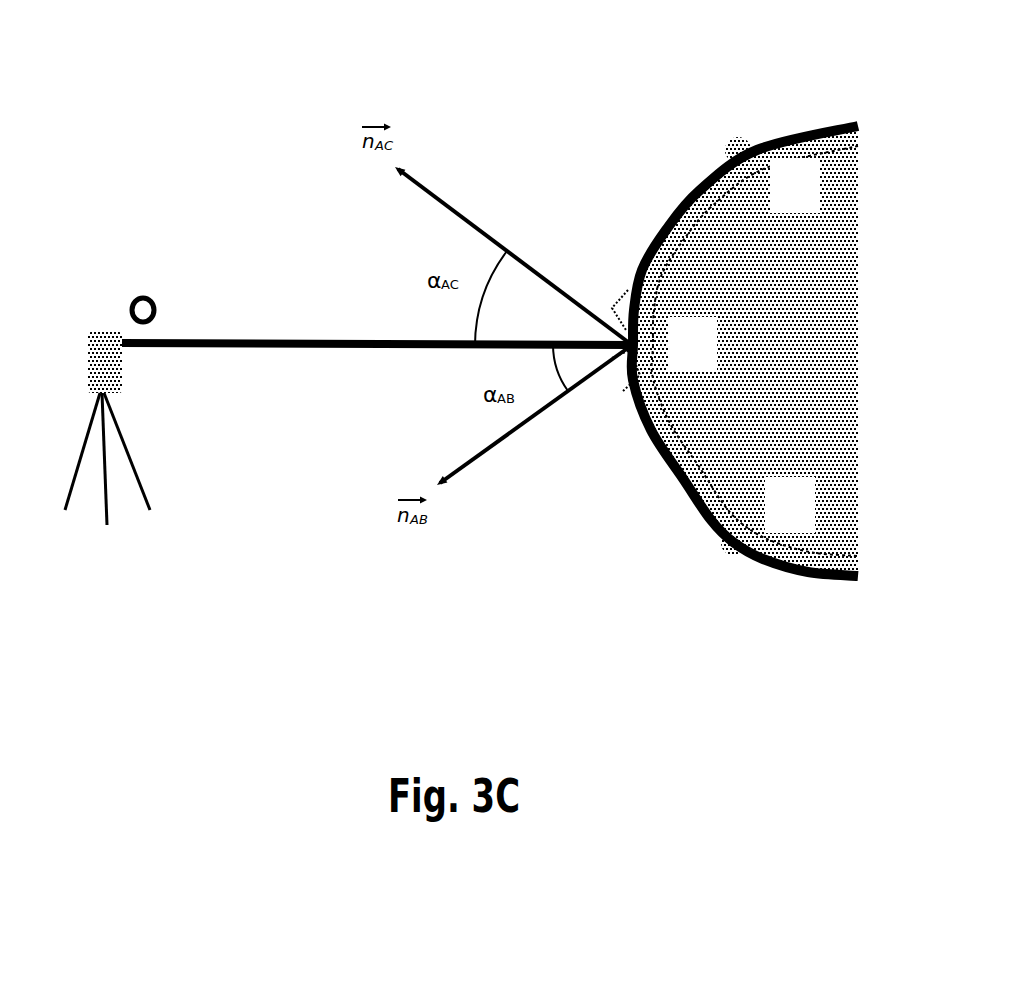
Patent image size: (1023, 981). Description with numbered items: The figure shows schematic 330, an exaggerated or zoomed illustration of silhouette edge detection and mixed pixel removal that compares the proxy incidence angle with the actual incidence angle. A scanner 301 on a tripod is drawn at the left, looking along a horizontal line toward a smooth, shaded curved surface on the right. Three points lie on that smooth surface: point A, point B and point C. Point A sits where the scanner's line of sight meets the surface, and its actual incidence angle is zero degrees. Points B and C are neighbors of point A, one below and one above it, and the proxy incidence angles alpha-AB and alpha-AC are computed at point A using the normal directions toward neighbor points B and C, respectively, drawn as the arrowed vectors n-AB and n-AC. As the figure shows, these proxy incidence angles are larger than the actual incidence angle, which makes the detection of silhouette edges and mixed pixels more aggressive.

The schematic 330 is at (806, 299).
The scanner 301 is at (340, 434).
The point A is at (692, 344).
The point B is at (790, 505).
The point C is at (795, 185).